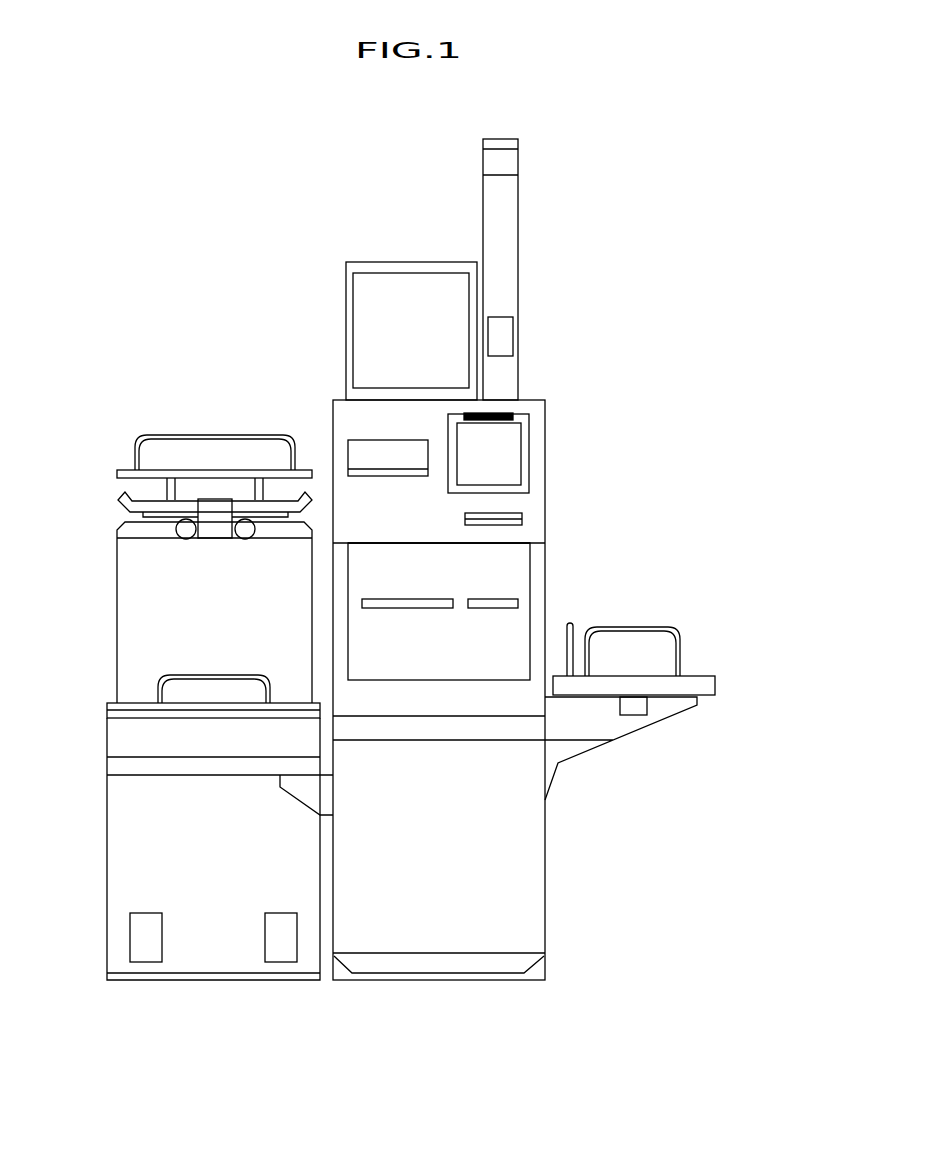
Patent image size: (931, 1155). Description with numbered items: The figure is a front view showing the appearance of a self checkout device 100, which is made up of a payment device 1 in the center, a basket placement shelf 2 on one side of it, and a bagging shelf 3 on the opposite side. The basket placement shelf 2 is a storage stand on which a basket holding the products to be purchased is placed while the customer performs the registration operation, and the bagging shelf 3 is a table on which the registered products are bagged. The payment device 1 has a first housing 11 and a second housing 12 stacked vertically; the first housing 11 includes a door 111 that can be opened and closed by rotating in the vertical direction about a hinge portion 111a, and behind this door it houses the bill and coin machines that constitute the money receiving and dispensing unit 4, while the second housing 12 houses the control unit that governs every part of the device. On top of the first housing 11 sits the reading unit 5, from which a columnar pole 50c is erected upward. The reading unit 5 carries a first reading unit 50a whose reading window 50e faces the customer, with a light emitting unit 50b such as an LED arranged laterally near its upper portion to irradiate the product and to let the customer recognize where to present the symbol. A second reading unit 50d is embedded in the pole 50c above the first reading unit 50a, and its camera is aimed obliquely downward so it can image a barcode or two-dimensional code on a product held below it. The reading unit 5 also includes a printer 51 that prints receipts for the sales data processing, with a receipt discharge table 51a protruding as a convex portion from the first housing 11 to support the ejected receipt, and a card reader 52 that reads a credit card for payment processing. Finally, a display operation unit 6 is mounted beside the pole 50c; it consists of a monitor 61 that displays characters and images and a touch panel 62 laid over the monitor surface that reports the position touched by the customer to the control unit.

The self checkout device 100 is at (602, 185).
The payment device 1 is at (530, 277).
The basket placement shelf 2 is at (718, 685).
The bagging shelf 3 is at (104, 721).
The money receiving and dispensing unit 4 is at (516, 630).
The reading unit 5 is at (547, 443).
The display operation unit 6 is at (347, 286).
The first housing 11 is at (332, 427).
The second housing 12 is at (547, 827).
The first reading unit 50a is at (531, 422).
The light emitting unit 50b is at (497, 413).
The pole 50c is at (490, 200).
The second reading unit 50d is at (507, 337).
The reading window 50e is at (507, 462).
The printer 51 is at (362, 437).
The receipt discharge table 51a is at (372, 478).
The card reader 52 is at (465, 520).
The monitor 61 is at (365, 262).
The touch panel 62 is at (415, 285).
The door 111 is at (547, 567).
The hinge portion 111a is at (520, 542).